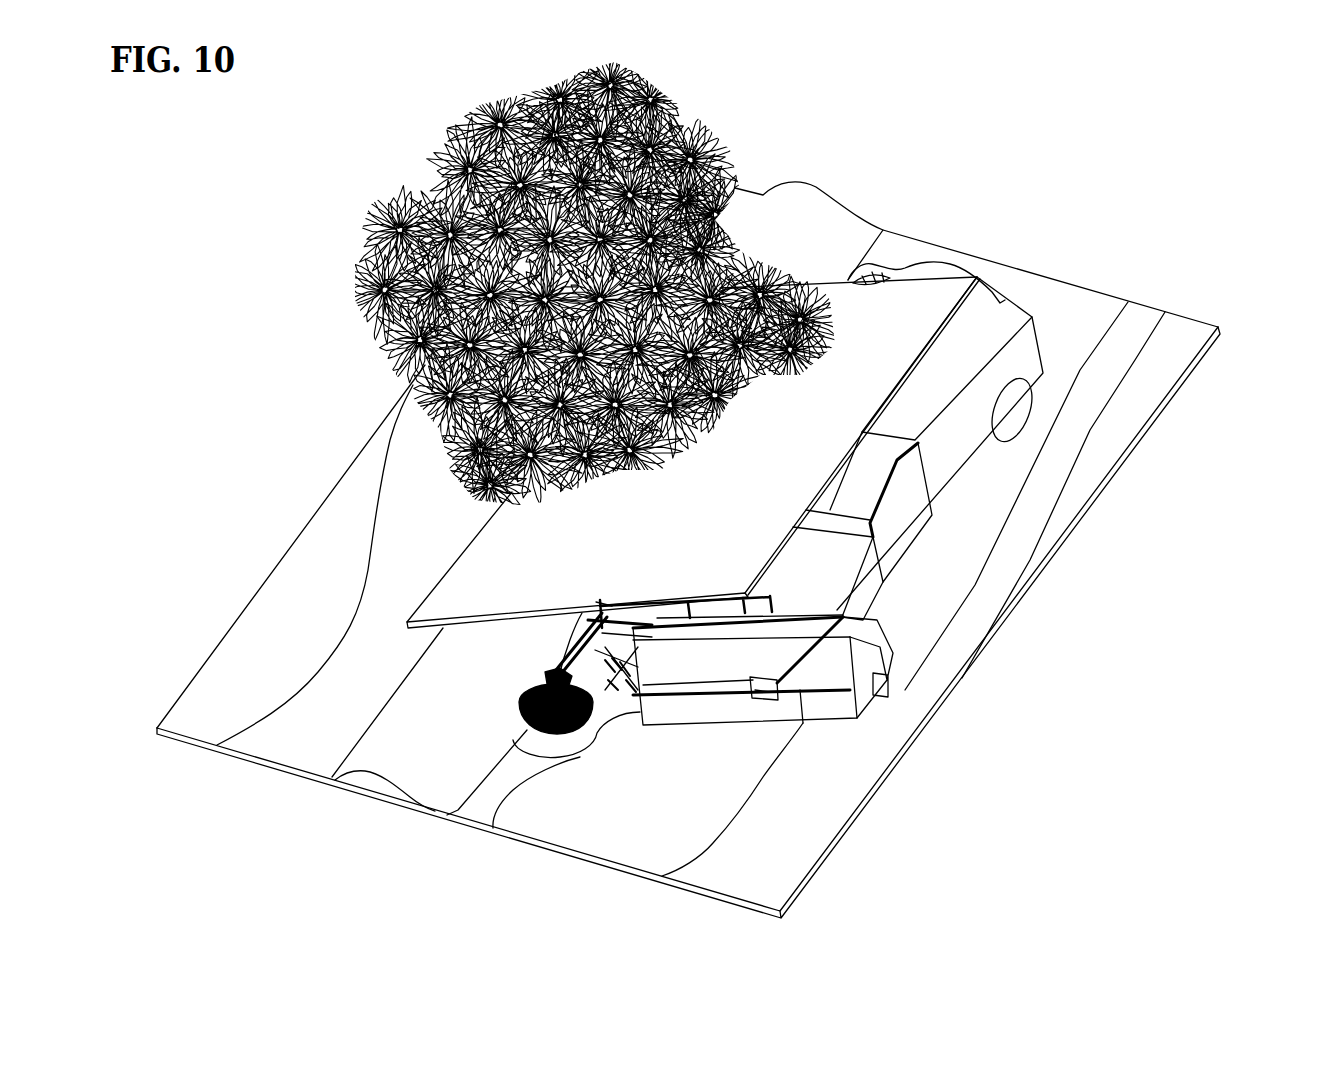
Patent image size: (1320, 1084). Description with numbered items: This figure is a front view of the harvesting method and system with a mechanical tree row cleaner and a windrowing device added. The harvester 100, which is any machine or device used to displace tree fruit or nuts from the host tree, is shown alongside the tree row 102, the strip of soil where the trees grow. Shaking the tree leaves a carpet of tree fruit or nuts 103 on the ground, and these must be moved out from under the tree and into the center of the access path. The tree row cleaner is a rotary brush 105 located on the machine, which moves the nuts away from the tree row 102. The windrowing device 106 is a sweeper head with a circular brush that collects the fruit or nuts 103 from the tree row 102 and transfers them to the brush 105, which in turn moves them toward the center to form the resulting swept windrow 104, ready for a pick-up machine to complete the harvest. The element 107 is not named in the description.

The harvester 100 is at (958, 457).
The tree row 102 is at (398, 762).
The tree fruit or nuts 103 is at (598, 837).
The windrow 104 is at (1143, 330).
The rotary brush 105 is at (523, 720).
The windrowing device 106 is at (825, 663).
The raised plot 107 is at (935, 296).